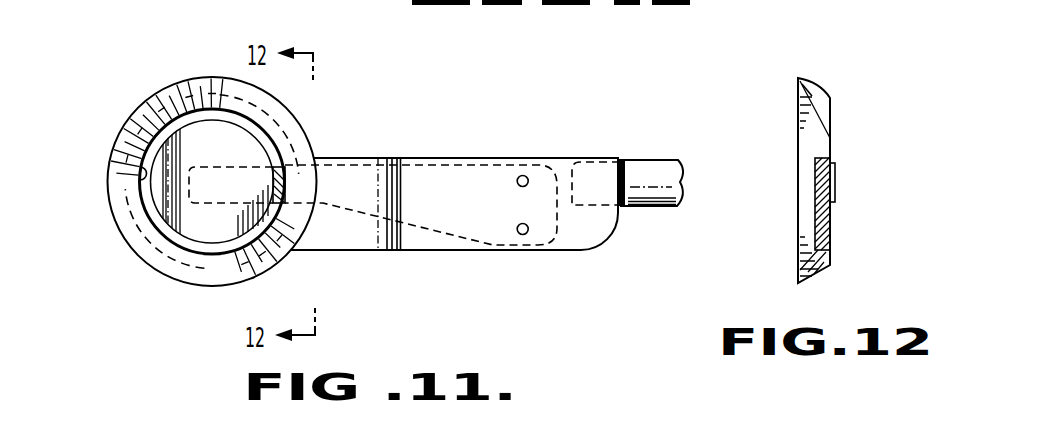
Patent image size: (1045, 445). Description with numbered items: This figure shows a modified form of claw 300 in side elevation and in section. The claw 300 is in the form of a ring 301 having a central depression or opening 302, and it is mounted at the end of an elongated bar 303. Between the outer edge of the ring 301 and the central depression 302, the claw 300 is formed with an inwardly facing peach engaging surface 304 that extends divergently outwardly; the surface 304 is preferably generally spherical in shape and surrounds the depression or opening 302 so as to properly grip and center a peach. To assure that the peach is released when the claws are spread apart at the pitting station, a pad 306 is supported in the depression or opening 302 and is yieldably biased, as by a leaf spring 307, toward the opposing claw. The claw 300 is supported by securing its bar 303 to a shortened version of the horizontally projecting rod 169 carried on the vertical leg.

In FIG. 11, the claw 300 is at (146, 84).
In FIG. 12, the claw 300 is at (827, 74).
In FIG. 11, the ring 301 is at (112, 208).
In FIG. 12, the ring 301 is at (820, 270).
In FIG. 11, the central depression or opening 302 is at (139, 174).
In FIG. 12, the central depression or opening 302 is at (835, 108).
In FIG. 11, the elongated bar 303 is at (485, 160).
In FIG. 12, the elongated bar 303 is at (833, 215).
In FIG. 11, the peach engaging surfaces 304 is at (157, 258).
In FIG. 11, the pad 306 is at (228, 156).
In FIG. 11, the leaf spring 307 is at (347, 164).
In FIG. 12, the leaf spring 307 is at (836, 175).
In FIG. 11, the horizontally projecting rod 169 is at (657, 163).